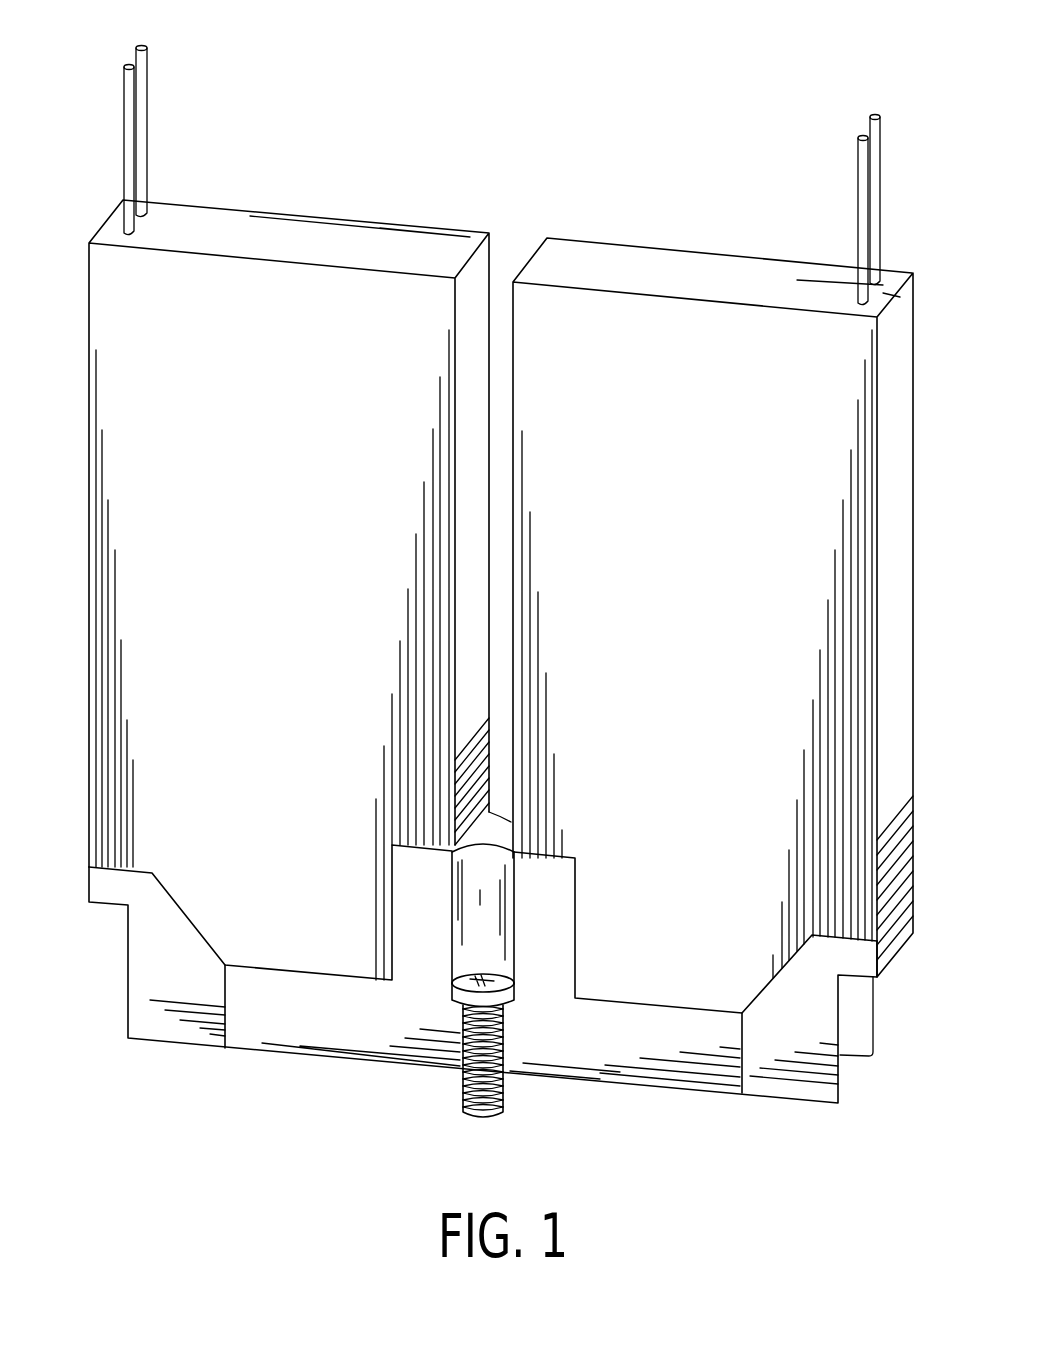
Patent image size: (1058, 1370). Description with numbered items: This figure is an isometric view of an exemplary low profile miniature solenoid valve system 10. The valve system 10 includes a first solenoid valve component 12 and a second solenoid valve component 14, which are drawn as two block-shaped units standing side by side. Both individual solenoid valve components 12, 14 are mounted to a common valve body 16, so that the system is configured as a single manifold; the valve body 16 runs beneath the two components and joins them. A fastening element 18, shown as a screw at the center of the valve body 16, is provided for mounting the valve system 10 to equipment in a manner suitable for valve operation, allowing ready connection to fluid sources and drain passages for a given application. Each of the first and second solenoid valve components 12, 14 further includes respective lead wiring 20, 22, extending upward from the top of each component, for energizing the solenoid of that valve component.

The low profile miniature solenoid valve system 10 is at (562, 131).
The first solenoid valve component 12 is at (79, 615).
The second solenoid valve component 14 is at (924, 603).
The common valve body 16 is at (360, 1073).
The fastening element 18 is at (480, 1120).
The lead wiring 20 is at (142, 108).
The lead wiring 22 is at (865, 172).